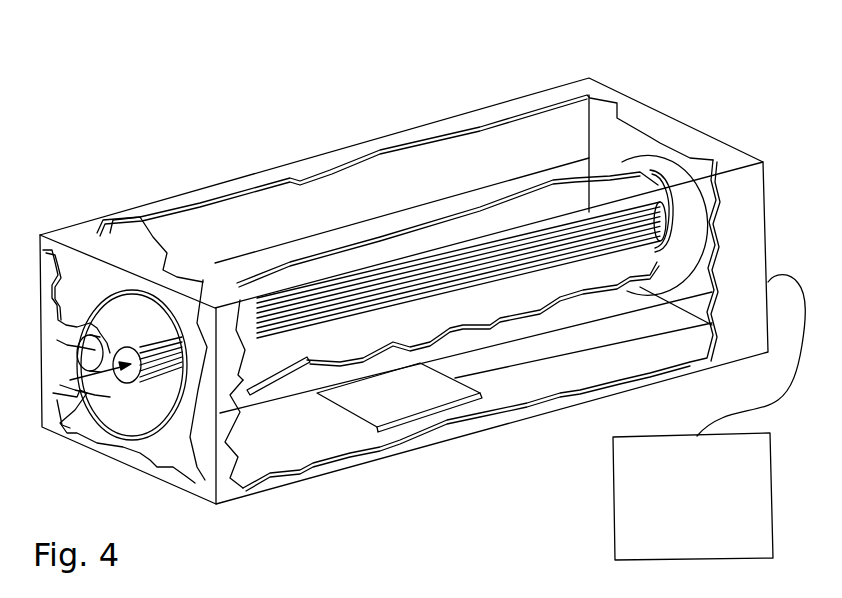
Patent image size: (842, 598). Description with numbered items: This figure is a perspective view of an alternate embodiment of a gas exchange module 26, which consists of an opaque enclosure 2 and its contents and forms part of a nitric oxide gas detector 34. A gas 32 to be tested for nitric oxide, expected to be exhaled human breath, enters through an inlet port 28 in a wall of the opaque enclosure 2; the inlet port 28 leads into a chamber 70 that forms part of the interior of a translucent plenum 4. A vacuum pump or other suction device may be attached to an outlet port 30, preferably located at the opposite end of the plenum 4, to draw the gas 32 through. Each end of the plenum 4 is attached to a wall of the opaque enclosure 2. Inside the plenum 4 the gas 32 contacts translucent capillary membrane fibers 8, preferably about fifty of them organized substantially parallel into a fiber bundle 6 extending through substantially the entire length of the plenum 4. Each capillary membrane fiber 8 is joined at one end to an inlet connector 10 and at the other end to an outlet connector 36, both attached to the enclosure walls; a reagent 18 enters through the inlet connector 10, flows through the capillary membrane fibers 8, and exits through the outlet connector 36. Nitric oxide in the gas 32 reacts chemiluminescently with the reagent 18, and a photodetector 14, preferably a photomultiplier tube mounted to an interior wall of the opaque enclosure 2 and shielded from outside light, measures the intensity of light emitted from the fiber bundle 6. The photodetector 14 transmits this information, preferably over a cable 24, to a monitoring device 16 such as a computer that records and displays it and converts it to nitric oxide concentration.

The opaque enclosure 2 is at (67, 232).
The plenum 4 is at (219, 275).
The fiber bundle 6 is at (347, 268).
The capillary membrane fibers 8 is at (168, 405).
The inlet connector 10 is at (138, 348).
The photodetector 14 is at (400, 402).
The monitoring device 16 is at (705, 508).
The reagent 18 is at (100, 395).
The cable 24 is at (785, 387).
The gas exchange module 26 is at (522, 66).
The inlet port 28 is at (52, 323).
The outlet port 30 is at (672, 248).
The gas 32 is at (80, 356).
The nitric oxide gas detector 34 is at (355, 523).
The outlet connector 36 is at (660, 188).
The chamber 70 is at (566, 205).